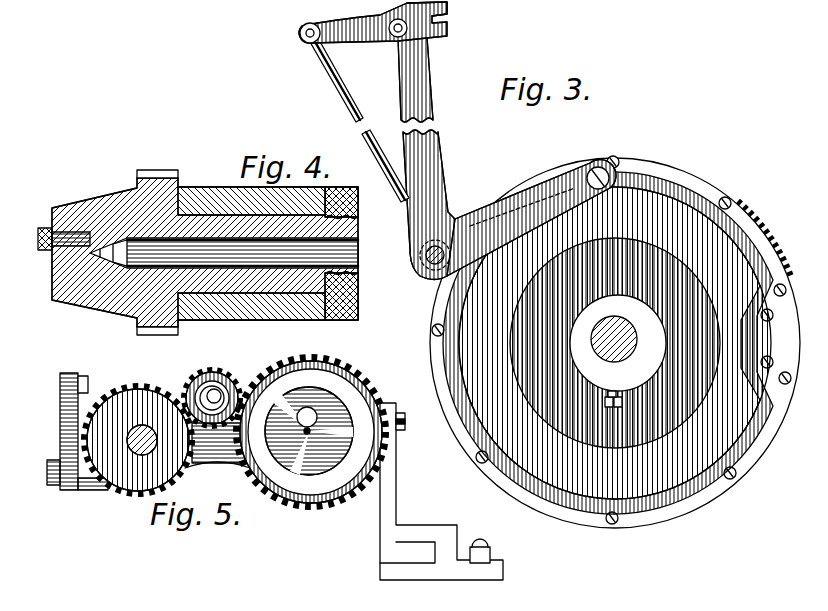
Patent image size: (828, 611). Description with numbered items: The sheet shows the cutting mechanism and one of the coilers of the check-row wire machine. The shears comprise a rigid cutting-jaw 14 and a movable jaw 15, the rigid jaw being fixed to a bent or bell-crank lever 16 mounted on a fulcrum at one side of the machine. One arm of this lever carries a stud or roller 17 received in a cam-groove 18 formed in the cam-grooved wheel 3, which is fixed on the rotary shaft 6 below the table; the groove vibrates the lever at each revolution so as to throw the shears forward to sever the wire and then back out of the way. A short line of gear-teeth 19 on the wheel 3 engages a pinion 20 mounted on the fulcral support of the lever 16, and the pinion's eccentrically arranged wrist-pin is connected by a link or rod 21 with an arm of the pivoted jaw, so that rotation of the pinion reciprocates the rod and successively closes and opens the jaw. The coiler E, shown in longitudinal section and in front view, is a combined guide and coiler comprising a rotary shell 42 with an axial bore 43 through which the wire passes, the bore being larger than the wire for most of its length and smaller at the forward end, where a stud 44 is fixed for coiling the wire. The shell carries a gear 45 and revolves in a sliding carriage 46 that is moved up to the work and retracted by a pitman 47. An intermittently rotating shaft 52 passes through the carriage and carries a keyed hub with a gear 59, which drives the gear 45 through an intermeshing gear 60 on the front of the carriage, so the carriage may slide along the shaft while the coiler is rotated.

In FIG. 3, the cam-grooved wheel 3 is at (615, 342).
In FIG. 3, the rotary shaft 6 is at (632, 343).
In FIG. 3, the cutting-jaw 14 is at (440, 13).
In FIG. 3, the movable jaw 15 is at (386, 24).
In FIG. 3, the bell-crank lever 16 is at (507, 158).
In FIG. 3, the stud or roller 17 is at (598, 168).
In FIG. 3, the cam-groove 18 is at (690, 190).
In FIG. 3, the gear-teeth 19 is at (752, 228).
In FIG. 3, the pinion 20 is at (421, 258).
In FIG. 3, the link or rod 21 is at (357, 116).
In FIG. 4, the rotary shell 42 is at (92, 310).
In FIG. 5, the rotary shell 42 is at (294, 442).
In FIG. 4, the axial bore 43 is at (237, 252).
In FIG. 4, the stud 44 is at (49, 239).
In FIG. 5, the stud 44 is at (307, 414).
In FIG. 4, the gear 45 is at (157, 251).
In FIG. 5, the gear 45 is at (311, 428).
In FIG. 4, the carriage 46 is at (251, 264).
In FIG. 5, the carriage 46 is at (400, 472).
In FIG. 5, the pitman 47 is at (60, 410).
In FIG. 5, the shaft 52 is at (152, 450).
In FIG. 5, the gear 59 is at (138, 431).
In FIG. 5, the intermeshing gear 60 is at (212, 392).
In FIG. 4, the coiler E is at (205, 247).
In FIG. 5, the coiler E is at (336, 428).